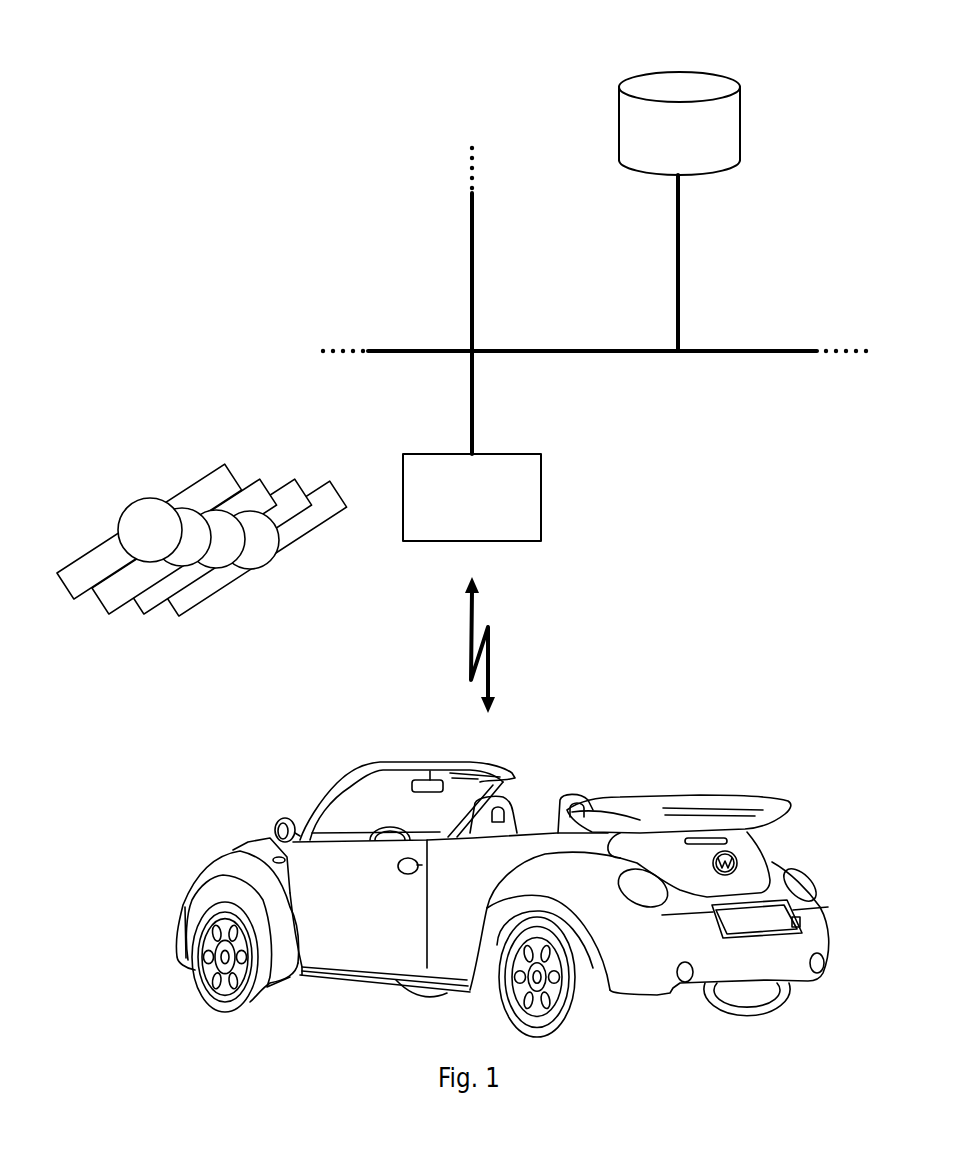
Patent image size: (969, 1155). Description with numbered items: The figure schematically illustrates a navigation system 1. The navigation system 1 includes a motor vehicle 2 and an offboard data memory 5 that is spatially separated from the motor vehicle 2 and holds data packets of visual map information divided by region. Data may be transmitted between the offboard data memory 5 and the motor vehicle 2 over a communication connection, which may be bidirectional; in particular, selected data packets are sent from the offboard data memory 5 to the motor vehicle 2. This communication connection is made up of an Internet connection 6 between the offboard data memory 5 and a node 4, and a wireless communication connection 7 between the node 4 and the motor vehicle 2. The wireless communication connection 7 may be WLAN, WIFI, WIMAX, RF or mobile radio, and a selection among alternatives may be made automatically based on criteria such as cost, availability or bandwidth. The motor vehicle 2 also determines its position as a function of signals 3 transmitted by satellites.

The navigation system 1 is at (224, 227).
The motor vehicle 2 is at (658, 852).
The signals 3 is at (97, 553).
The node 4 is at (518, 499).
The offboard data memory 5 is at (632, 129).
The Internet connection 6 is at (406, 349).
The wireless communication connection 7 is at (490, 659).